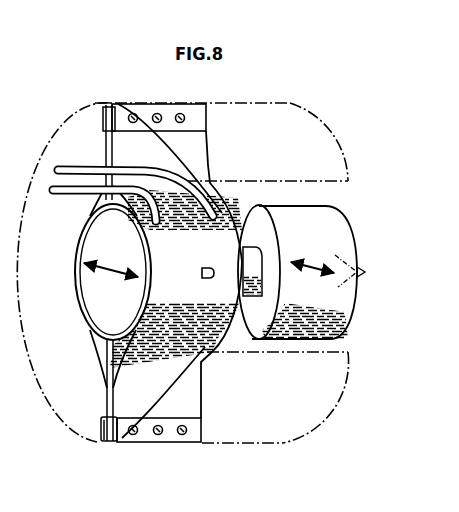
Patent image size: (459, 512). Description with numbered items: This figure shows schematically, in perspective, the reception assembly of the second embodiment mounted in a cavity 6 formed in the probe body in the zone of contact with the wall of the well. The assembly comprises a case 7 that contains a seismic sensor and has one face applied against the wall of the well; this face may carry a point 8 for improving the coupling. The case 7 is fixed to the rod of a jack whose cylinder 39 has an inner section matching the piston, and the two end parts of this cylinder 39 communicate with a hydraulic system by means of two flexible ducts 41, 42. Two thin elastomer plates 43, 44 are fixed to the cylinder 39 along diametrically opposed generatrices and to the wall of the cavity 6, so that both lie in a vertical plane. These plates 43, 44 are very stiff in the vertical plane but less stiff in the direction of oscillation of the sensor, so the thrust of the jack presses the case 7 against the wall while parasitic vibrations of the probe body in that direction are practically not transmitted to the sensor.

The cavity 6 is at (303, 163).
The case 7 is at (340, 300).
The point 8 is at (361, 272).
The cylinder 39 is at (98, 292).
The flexible duct 41 is at (73, 166).
The flexible duct 42 is at (68, 196).
The elastomer plate 43 is at (123, 146).
The elastomer plate 44 is at (118, 381).